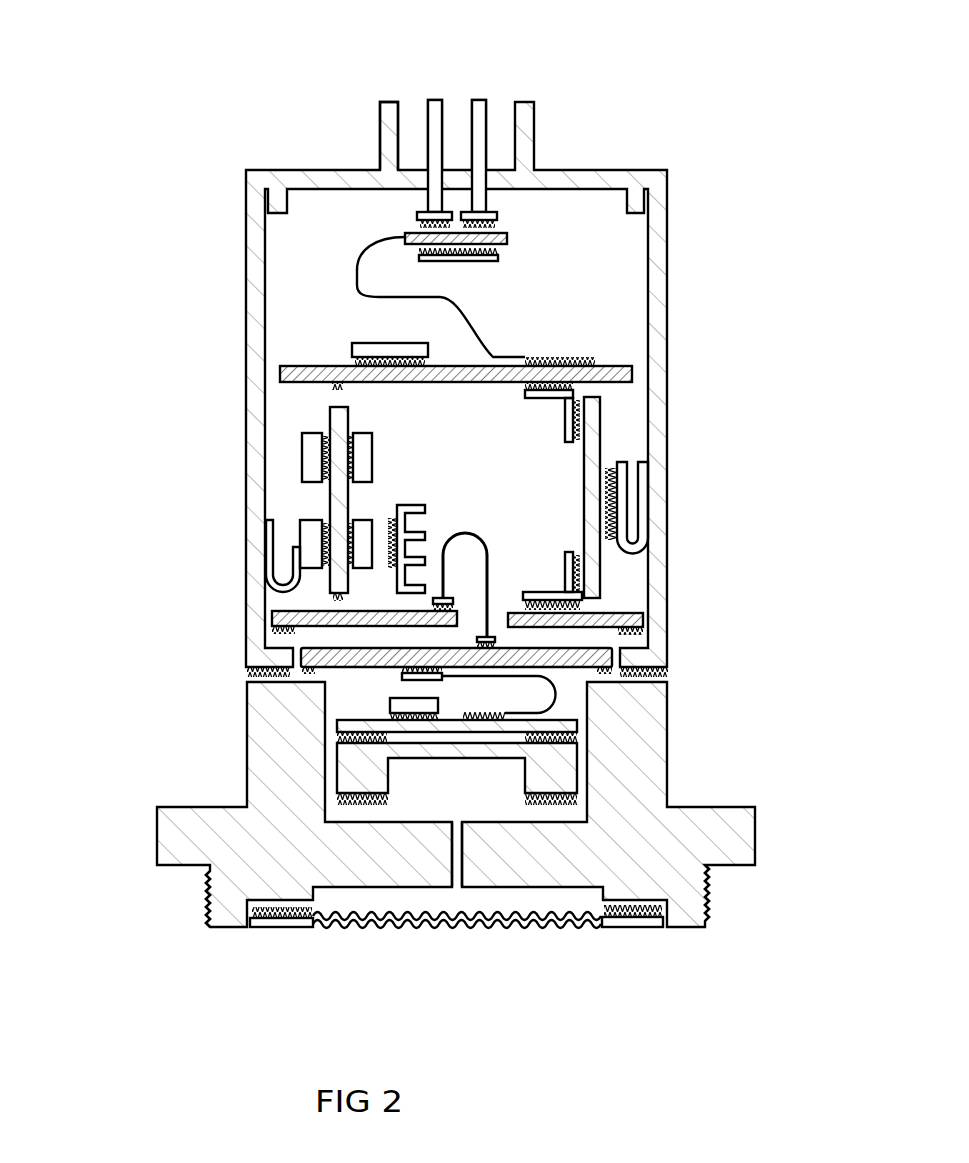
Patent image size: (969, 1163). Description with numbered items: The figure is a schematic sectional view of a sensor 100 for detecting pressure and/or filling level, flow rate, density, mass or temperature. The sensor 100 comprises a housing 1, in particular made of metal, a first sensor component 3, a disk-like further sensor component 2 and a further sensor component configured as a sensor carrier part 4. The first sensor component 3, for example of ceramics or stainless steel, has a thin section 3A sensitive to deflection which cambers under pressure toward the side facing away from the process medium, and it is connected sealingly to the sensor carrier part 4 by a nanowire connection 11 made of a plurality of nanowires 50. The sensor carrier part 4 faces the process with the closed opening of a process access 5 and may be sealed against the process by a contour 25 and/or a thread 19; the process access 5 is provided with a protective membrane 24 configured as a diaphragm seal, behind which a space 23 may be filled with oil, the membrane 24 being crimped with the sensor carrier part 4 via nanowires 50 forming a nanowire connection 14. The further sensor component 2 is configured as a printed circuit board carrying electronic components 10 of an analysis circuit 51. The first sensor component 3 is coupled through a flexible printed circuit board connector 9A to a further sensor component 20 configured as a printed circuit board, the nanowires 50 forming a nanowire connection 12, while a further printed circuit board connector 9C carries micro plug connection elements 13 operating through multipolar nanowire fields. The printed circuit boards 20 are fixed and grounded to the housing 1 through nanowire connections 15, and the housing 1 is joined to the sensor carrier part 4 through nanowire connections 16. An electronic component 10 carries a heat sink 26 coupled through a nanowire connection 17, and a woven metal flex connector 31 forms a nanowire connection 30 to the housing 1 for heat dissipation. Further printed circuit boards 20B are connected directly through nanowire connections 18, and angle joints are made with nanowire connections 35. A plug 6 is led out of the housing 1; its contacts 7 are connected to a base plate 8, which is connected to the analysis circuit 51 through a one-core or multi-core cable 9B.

The housing 1 is at (248, 315).
The further sensor component 2 is at (350, 728).
The first sensor component 3 is at (352, 775).
The thin section sensitive to deflection 3A is at (440, 752).
The sensor carrier part 4 is at (187, 840).
The process access 5 is at (497, 955).
The plug 6 is at (379, 130).
The contacts 7 is at (480, 100).
The base plate 8 is at (405, 238).
The flexible printed circuit board connector 9A is at (560, 692).
The cable 9B is at (463, 312).
The further printed circuit board connector 9C is at (467, 528).
The electronic components 10 is at (353, 535).
The nanowire connection 11 is at (577, 800).
The nanowire connection 12 is at (588, 685).
The micro plug connection elements 13 is at (300, 626).
The nanowire connection 14 is at (637, 920).
The nanowire connections 15 is at (660, 665).
The nanowire connections 16 is at (672, 672).
The nanowire connection 17 is at (300, 552).
The nanowire connections 18 is at (288, 376).
The thread 19 is at (710, 895).
The further sensor component configured as printed circuit board 20 is at (645, 598).
The further sensor components configured as printed circuit boards 20B is at (337, 422).
The space behind protective membrane 23 is at (550, 905).
The protective membrane 24 is at (447, 922).
The contour 25 is at (160, 865).
The heat sink 26 is at (422, 505).
The nanowire connection 30 is at (265, 540).
The woven flex connector 31 is at (392, 548).
The nanowire connections of angle joints 35 is at (593, 582).
The nanowires 50 is at (308, 670).
The analysis circuit 51 is at (606, 358).
The sensor 100 is at (700, 177).